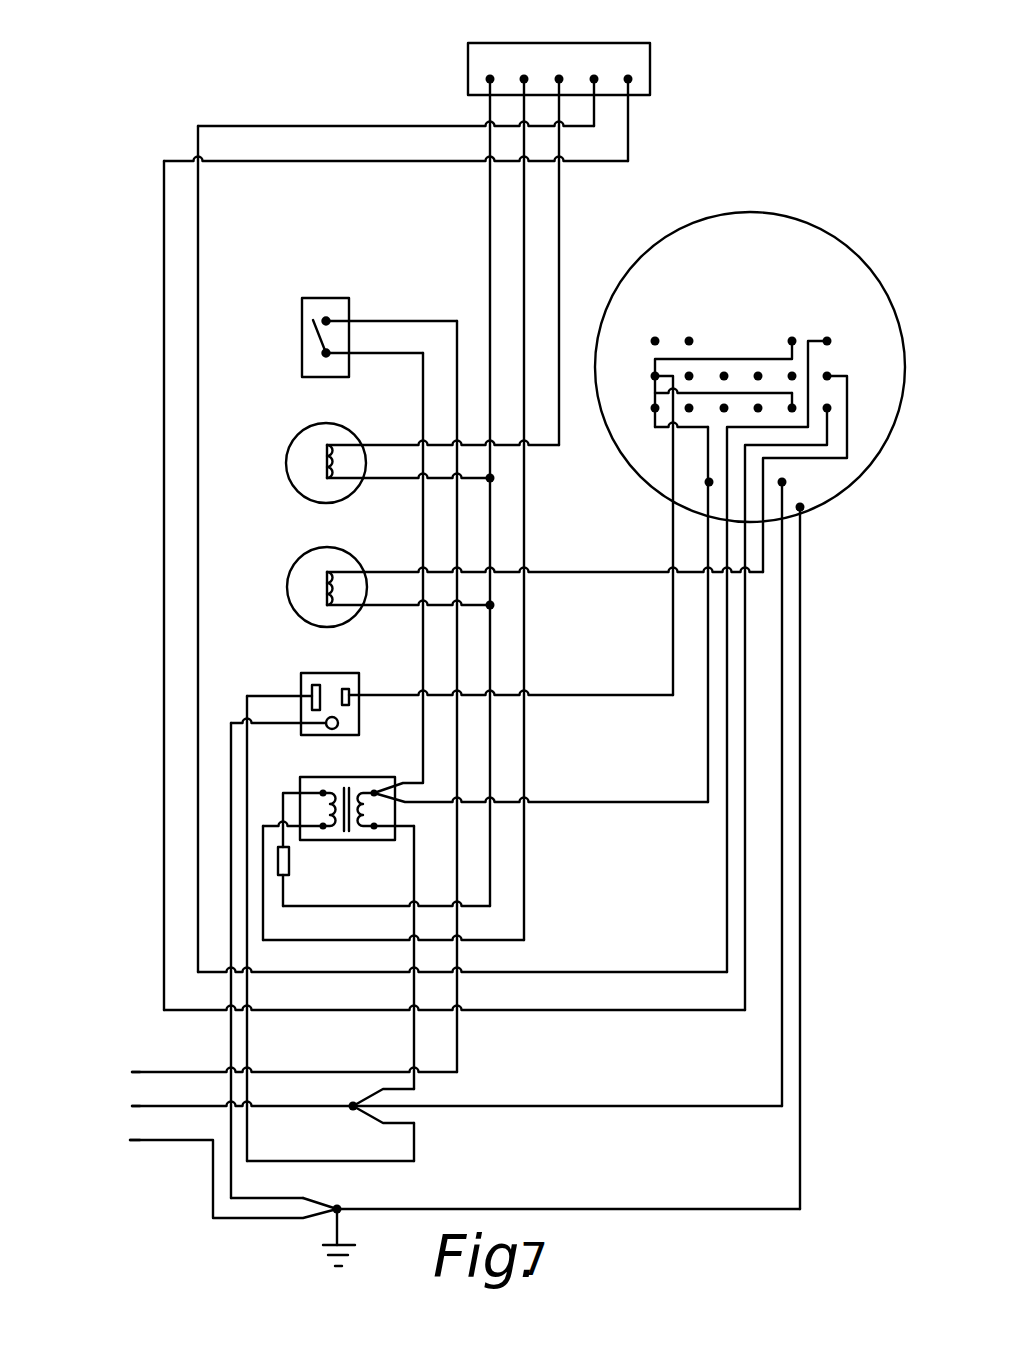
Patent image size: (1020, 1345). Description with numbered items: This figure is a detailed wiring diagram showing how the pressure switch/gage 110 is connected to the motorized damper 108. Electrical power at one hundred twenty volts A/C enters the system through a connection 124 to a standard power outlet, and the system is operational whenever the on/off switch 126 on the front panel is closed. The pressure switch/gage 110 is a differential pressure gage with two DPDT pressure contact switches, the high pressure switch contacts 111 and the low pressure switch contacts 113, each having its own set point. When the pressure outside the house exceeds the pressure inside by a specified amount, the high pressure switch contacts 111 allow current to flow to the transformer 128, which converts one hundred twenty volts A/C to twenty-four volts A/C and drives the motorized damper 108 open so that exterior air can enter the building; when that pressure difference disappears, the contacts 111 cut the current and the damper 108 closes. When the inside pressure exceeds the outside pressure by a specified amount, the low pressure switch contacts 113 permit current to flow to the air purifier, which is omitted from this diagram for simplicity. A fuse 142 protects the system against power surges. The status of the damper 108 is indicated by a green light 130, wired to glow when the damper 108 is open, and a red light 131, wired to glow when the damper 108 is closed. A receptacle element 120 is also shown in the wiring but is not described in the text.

The motorized damper 108 is at (652, 73).
The pressure switch/gage 110 is at (750, 315).
The high pressure switch contacts 111 is at (822, 297).
The low pressure switch contacts 113 is at (660, 292).
The on/off switch 126 is at (302, 336).
The green light 130 is at (287, 463).
The red light 131 is at (288, 587).
The power outlet receptacle 120 is at (301, 683).
The transformer 128 is at (300, 790).
The fuse 142 is at (290, 865).
The connection 124 is at (85, 1064).